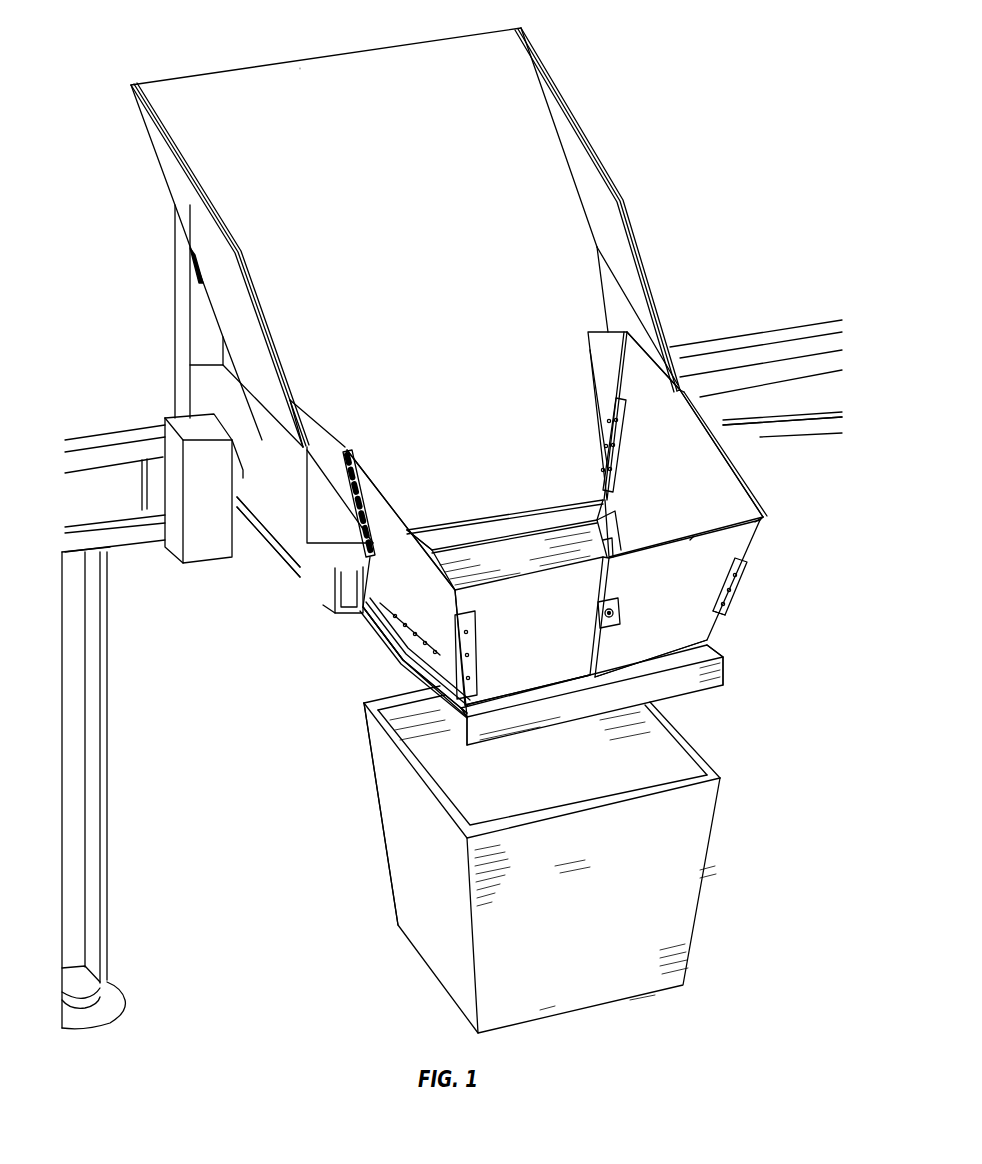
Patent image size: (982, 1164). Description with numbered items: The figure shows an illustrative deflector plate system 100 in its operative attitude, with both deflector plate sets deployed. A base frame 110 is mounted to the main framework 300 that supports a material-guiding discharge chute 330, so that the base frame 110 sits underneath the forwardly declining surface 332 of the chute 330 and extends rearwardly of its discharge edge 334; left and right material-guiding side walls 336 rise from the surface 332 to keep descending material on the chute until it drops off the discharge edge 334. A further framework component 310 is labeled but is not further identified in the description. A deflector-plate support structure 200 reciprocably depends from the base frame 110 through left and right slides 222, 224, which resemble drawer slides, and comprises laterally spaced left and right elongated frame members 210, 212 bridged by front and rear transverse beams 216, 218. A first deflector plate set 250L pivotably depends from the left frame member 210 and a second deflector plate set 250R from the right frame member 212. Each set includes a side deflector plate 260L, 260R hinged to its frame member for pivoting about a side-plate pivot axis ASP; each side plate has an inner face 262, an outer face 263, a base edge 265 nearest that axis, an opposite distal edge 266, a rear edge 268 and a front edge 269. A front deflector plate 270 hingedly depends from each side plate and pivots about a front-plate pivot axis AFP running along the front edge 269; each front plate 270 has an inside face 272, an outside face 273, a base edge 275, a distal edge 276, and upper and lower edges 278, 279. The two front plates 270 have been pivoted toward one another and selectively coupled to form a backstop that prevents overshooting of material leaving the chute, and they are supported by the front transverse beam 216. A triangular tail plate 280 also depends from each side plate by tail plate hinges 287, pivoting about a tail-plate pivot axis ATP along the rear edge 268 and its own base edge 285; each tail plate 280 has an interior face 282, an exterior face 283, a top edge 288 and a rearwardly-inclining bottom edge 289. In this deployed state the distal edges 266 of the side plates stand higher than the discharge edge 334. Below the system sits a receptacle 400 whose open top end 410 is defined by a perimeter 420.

The deflector plate system 100 is at (272, 655).
The base frame 110 is at (335, 600).
The deflector-plate support structure 200 is at (725, 672).
The left elongated frame member 210 is at (467, 715).
The right elongated frame member 212 is at (728, 658).
The front transverse beam 216 is at (592, 695).
The rear transverse beam 218 is at (514, 552).
The left slide 222 is at (402, 655).
The right slide 224 is at (728, 623).
The first deflector plate set 250L is at (382, 512).
The second deflector plate set 250R is at (732, 497).
The left side deflector plate 260L is at (407, 583).
The right side deflector plate 260R is at (680, 444).
The inner face 262 is at (688, 412).
The outer face 263 is at (712, 442).
The base edge 265 is at (373, 627).
The distal edge 266 is at (410, 528).
The rear edge 268 is at (627, 370).
The front edge 269 is at (447, 690).
The front deflector plate 270 is at (607, 612).
The inside face 272 is at (688, 540).
The outside face 273 is at (748, 527).
The base edge 275 is at (478, 697).
The distal edge 276 is at (607, 584).
The upper edge 278 is at (523, 580).
The lower edge 279 is at (582, 678).
The tail plate 280 is at (600, 343).
The interior face 282 is at (605, 390).
The exterior face 283 is at (308, 425).
The base edge 285 is at (345, 452).
The tail plate hinges 287 is at (357, 487).
The top edge 288 is at (292, 402).
The rearwardly-inclining bottom edge 289 is at (600, 432).
The main framework 300 is at (133, 428).
The frame bracket 310 is at (200, 408).
The material-guiding discharge chute 330 is at (300, 68).
The forwardly declining surface 332 is at (353, 136).
The discharge edge 334 is at (570, 505).
The material-guiding side walls 336 is at (223, 278).
The receptacle 400 is at (542, 859).
The open top end 410 is at (458, 797).
The perimeter 420 is at (427, 790).
The tail-plate pivot axis ATP is at (610, 370).
The front-plate pivot axis AFP is at (454, 592).
The side-plate pivot axis ASP is at (475, 712).